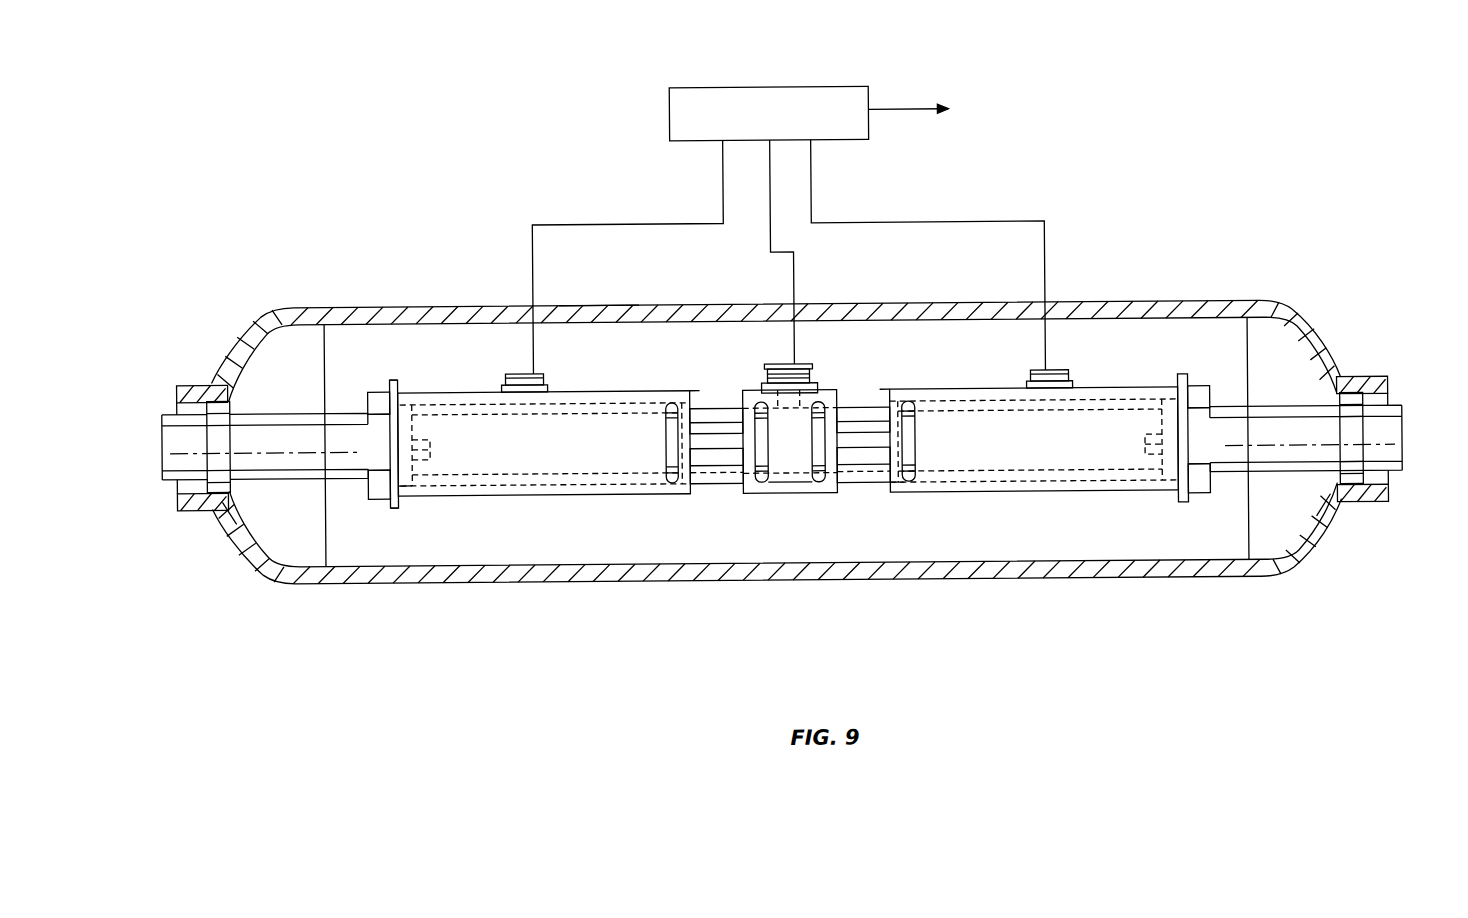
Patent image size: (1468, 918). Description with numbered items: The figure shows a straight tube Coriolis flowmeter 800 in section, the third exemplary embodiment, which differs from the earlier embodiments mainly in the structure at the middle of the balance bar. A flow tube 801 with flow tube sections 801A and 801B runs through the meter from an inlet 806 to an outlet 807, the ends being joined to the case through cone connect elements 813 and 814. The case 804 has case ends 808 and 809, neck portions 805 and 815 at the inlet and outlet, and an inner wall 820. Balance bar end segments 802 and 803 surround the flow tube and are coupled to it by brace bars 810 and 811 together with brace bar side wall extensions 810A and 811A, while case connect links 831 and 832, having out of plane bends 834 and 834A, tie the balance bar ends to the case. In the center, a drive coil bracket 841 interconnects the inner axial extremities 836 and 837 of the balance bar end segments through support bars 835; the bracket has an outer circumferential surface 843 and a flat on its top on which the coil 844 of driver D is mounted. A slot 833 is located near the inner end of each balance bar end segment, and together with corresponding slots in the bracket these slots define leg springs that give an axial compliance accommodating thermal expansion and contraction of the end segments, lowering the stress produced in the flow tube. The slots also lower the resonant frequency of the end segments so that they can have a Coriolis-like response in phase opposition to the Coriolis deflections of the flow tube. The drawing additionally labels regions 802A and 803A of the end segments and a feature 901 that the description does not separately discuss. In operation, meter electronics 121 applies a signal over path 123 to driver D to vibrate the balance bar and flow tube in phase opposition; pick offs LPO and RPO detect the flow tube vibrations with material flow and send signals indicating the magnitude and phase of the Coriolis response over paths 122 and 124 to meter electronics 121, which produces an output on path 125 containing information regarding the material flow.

The meter electronics 121 is at (692, 87).
The path 122 is at (726, 172).
The path 123 is at (770, 228).
The path 124 is at (813, 170).
The path 125 is at (913, 108).
The Coriolis flowmeter 800 is at (1256, 236).
The flow tube 801 is at (867, 483).
The flow tube section 801A is at (278, 445).
The flow tube section 801B is at (1292, 425).
The balance bar end segment 802 is at (571, 455).
The first balance bar end 802A is at (461, 484).
The balance bar end segment 803 is at (1022, 455).
The second balance bar end 803A is at (948, 482).
The case 804 is at (598, 304).
The neck portion 805 is at (196, 380).
The inlet 806 is at (162, 433).
The outlet 807 is at (1404, 432).
The case end 808 is at (244, 540).
The case end 809 is at (1324, 330).
The brace bar 810 is at (422, 460).
The brace bar side wall extension 810A is at (430, 440).
The brace bar 811 is at (1162, 456).
The brace bar side wall extension 811A is at (1162, 437).
The cone connect element 813 is at (214, 460).
The cone connect element 814 is at (1364, 452).
The neck portion 815 is at (1360, 506).
The inner wall 820 is at (598, 563).
The case connect link 831 is at (392, 377).
The case connect link 832 is at (1187, 377).
The slot 833 is at (666, 446).
The out of plane bend 834 is at (368, 390).
The out of plane bend 834A is at (390, 442).
The support bar 835 is at (720, 440).
The inner axial extremity 836 is at (692, 390).
The inner axial extremity 837 is at (893, 390).
The drive coil bracket 841 is at (744, 503).
The outer circumferential surface 843 is at (793, 482).
The coil 844 is at (800, 364).
The connecting brace 901 is at (862, 408).
The pick off LPO is at (520, 372).
The pick off RPO is at (1050, 372).
The driver D is at (785, 352).